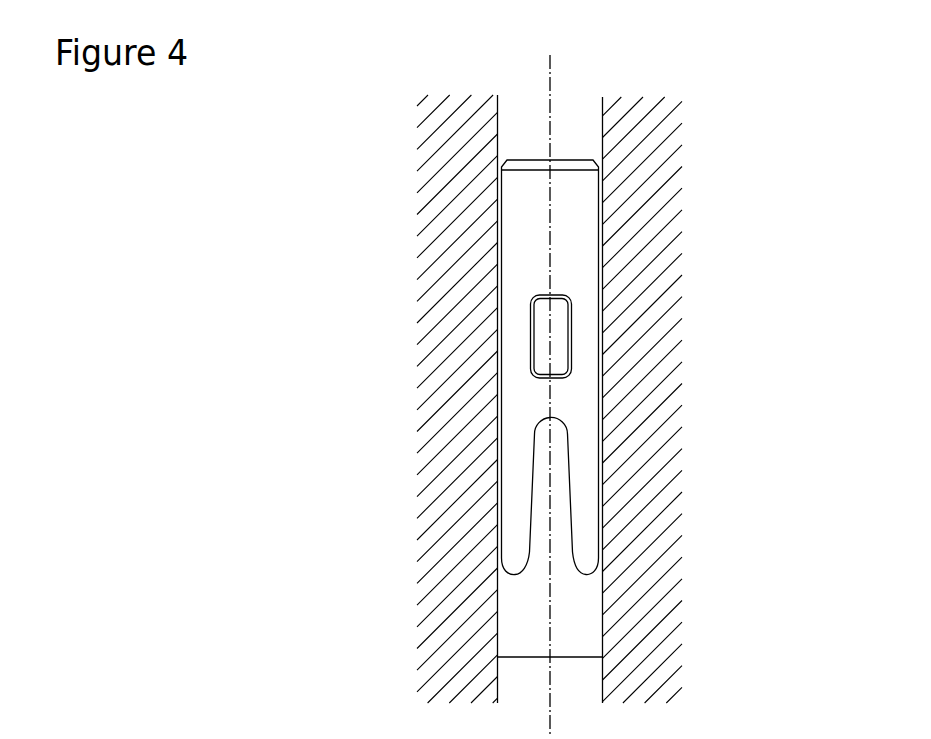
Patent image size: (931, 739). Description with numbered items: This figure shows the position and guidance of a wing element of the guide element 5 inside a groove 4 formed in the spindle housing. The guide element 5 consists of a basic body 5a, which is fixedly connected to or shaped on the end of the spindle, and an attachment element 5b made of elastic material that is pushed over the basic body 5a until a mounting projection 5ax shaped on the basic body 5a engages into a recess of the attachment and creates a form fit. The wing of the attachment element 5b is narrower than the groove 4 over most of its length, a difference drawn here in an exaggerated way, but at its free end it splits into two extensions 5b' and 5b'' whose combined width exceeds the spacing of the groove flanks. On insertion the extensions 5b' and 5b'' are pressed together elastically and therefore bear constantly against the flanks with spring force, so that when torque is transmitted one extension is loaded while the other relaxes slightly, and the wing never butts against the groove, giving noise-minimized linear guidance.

The groove 4 is at (575, 107).
The guide element 5 is at (534, 408).
The basic body 5a is at (582, 622).
The attachment element 5b is at (473, 290).
The first extension 5b' is at (439, 496).
The second extension 5b'' is at (666, 495).
The mounting projection 5ax is at (562, 347).